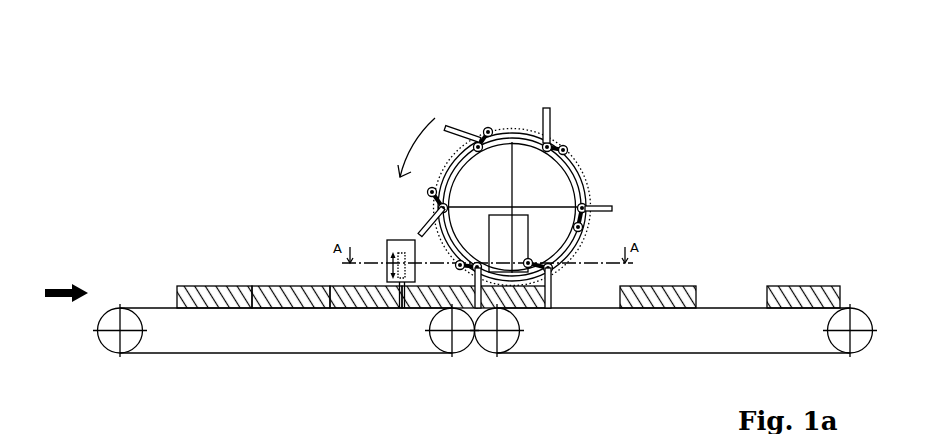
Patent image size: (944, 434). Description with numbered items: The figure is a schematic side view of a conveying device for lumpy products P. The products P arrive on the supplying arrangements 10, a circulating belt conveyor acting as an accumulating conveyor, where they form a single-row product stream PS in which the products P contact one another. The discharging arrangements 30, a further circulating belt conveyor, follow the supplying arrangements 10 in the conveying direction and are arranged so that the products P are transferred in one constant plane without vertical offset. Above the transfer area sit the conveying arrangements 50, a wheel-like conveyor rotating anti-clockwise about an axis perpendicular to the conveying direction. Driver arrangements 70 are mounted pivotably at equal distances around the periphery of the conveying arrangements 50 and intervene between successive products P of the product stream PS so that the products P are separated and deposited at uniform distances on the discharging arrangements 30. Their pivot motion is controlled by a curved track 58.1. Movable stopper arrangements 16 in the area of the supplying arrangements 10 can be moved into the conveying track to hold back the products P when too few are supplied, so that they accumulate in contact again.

The supplying arrangements 10 is at (272, 327).
The discharging arrangements 30 is at (659, 328).
The stopper arrangements 16 is at (400, 242).
The conveying arrangements 50 is at (578, 180).
The driver arrangements 70 is at (457, 133).
The curved track 58.1 is at (420, 433).
The lumpy products P is at (218, 287).
The product stream PS is at (322, 268).